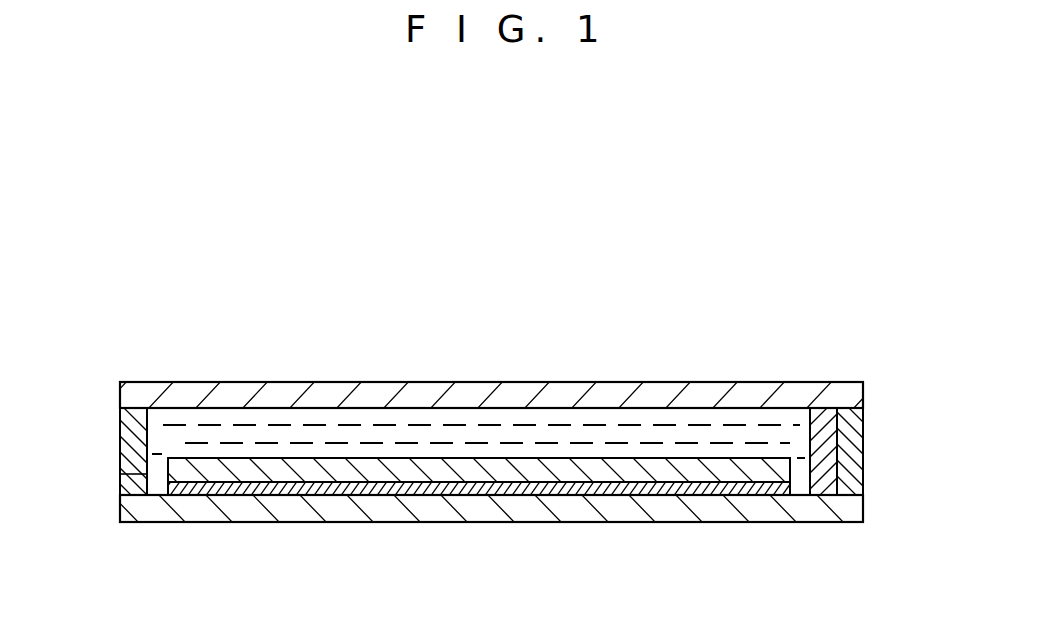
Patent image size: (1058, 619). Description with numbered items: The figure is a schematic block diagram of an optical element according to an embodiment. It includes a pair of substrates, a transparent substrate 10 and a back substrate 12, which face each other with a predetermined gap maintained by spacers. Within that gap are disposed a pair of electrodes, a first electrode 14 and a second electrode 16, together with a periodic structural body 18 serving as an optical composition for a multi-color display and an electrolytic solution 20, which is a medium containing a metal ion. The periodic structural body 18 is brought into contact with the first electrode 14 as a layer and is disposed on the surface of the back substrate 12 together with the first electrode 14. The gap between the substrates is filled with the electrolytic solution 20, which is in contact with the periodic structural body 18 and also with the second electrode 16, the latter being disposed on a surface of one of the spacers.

The transparent substrate 10 is at (760, 383).
The back substrate 12 is at (760, 522).
The first electrode 14 is at (537, 490).
The second electrode 16 is at (835, 422).
The periodic structural body 18 is at (423, 468).
The electrolytic solution 20 is at (525, 433).